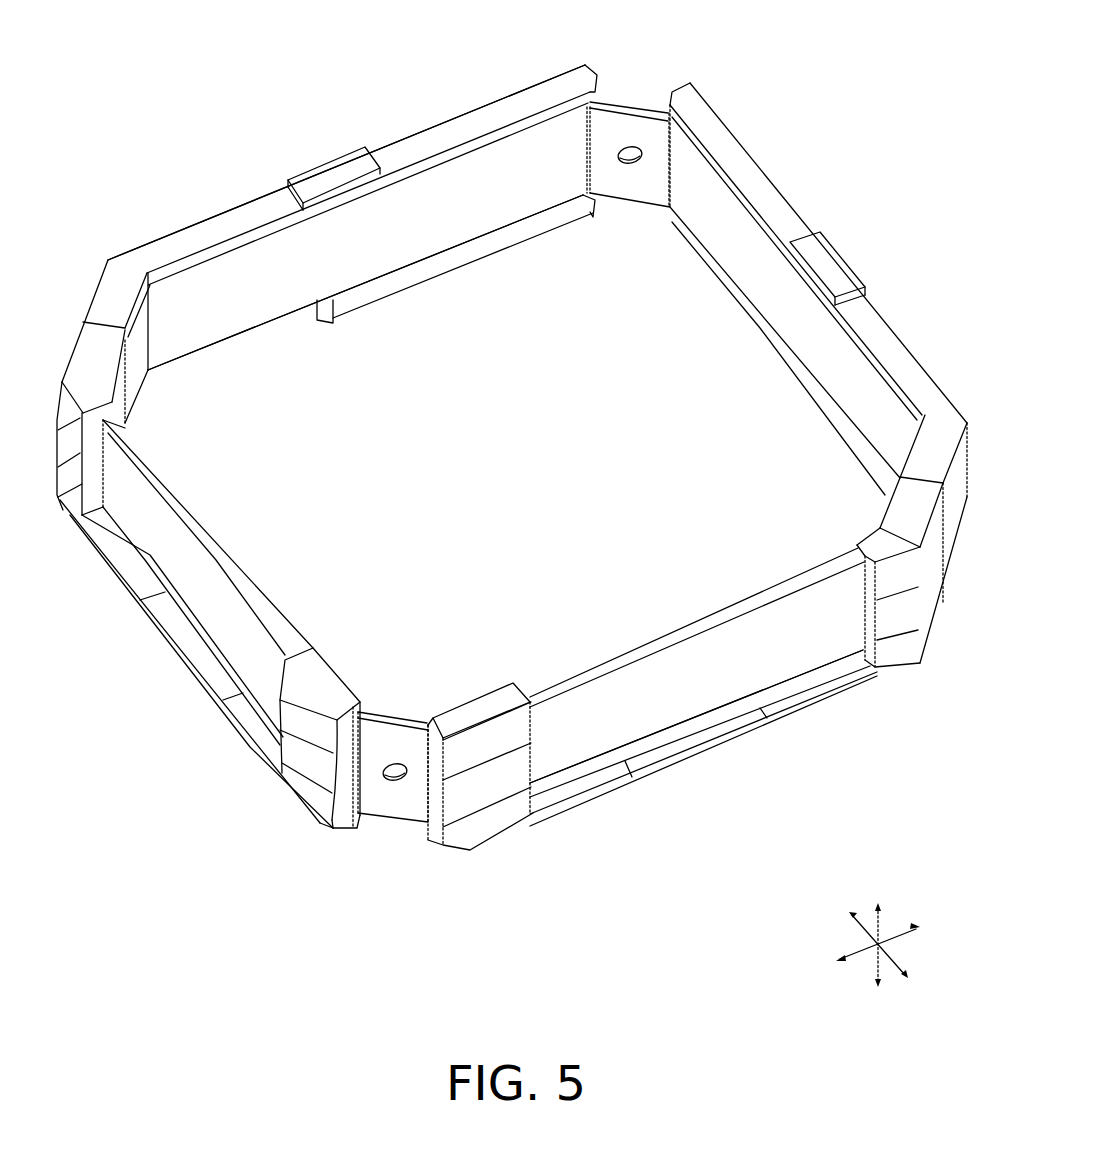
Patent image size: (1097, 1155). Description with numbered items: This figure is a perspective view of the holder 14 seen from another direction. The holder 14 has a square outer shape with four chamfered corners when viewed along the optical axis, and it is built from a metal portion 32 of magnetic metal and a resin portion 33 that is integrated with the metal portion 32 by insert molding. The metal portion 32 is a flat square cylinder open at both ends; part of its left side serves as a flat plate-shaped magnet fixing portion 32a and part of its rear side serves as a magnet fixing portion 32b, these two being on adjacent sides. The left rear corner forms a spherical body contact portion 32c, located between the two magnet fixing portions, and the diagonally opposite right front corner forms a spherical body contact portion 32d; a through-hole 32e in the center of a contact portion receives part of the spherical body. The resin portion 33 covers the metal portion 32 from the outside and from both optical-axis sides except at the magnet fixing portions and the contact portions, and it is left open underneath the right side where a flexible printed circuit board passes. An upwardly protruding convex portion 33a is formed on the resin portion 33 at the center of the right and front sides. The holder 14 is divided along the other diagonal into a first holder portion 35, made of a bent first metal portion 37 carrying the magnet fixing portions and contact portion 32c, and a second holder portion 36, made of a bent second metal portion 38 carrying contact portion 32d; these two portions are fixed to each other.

The holder 14 is at (514, 511).
The metal portion 32 is at (365, 291).
The magnet fixing portion 32a is at (696, 682).
The magnet fixing portion 32b is at (210, 624).
The spherical body contact portion 32c is at (393, 743).
The spherical body contact portion 32d is at (630, 128).
The through-hole 32e is at (522, 517).
The resin portion 33 is at (327, 290).
The convex portion 33a is at (579, 208).
The first holder portion 35 is at (652, 761).
The second holder portion 36 is at (346, 150).
The first metal portion 37 is at (725, 616).
The second metal portion 38 is at (818, 373).